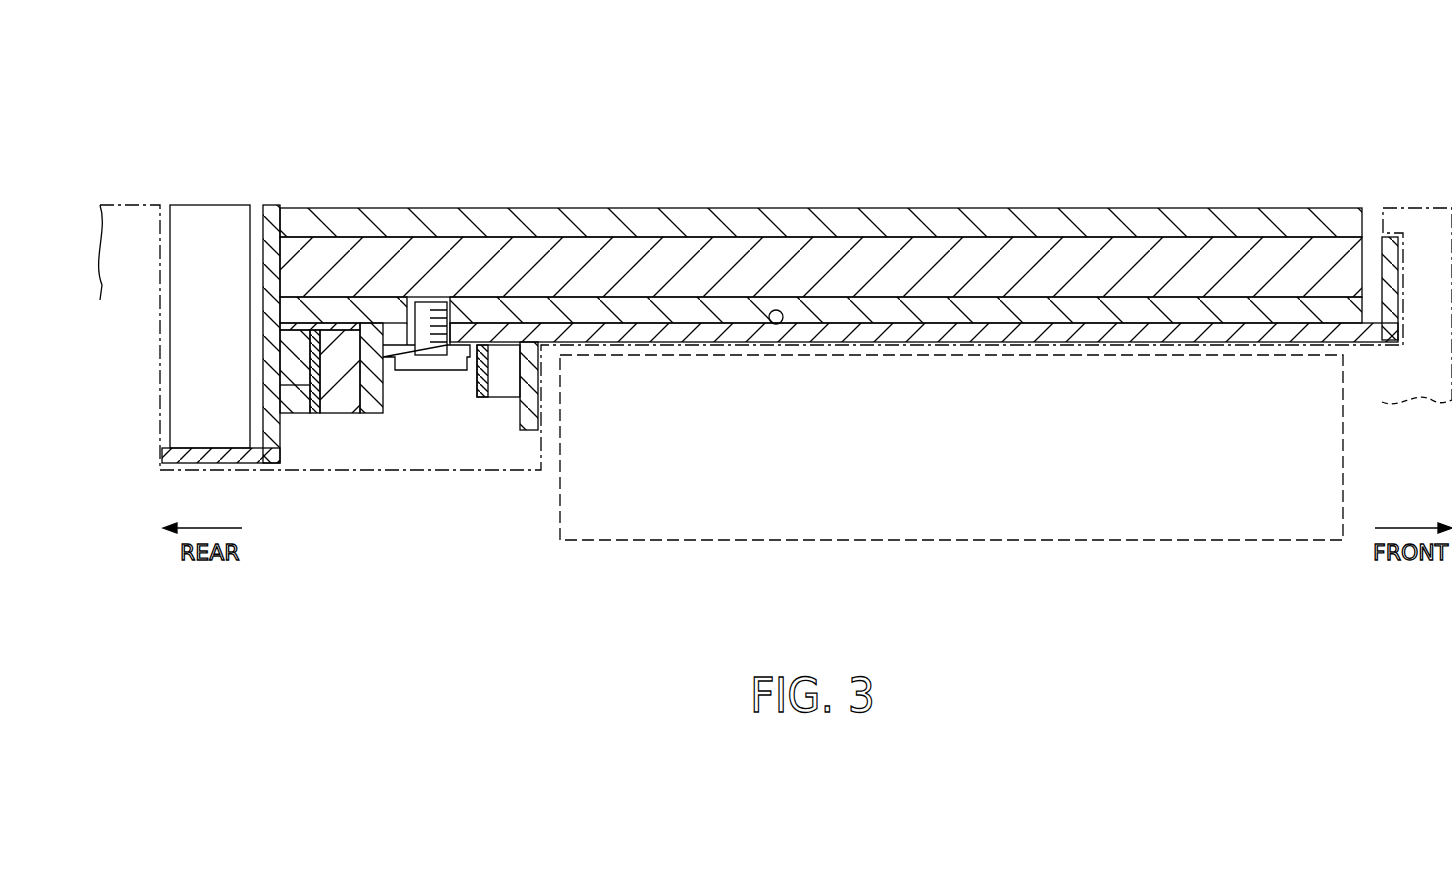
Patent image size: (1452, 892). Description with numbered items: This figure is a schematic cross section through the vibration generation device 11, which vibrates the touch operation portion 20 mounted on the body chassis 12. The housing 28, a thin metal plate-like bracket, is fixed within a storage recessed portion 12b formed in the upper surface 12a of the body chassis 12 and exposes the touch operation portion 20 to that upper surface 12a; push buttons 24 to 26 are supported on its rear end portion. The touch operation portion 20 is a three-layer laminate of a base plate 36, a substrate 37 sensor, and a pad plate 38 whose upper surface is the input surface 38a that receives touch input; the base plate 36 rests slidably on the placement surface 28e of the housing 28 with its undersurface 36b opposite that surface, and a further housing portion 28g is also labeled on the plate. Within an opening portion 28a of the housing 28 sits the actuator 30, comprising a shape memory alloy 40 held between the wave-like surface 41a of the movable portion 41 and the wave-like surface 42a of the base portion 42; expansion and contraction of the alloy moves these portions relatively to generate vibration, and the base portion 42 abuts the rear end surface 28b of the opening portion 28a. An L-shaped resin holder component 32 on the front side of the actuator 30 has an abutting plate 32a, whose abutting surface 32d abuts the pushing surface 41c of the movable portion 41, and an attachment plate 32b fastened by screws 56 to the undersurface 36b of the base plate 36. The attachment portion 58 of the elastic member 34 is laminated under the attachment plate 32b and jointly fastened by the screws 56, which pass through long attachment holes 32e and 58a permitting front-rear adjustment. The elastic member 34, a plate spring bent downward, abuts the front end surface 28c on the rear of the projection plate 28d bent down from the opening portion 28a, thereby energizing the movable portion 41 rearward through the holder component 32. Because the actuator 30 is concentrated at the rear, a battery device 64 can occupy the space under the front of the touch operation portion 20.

The vibration generation device 11 is at (193, 62).
The touch operation portion 20 is at (821, 258).
The body chassis 12 is at (140, 205).
The upper surface 12a is at (1410, 206).
The storage recessed portion 12b is at (1010, 328).
The push button 24 is at (213, 278).
The push button 26 is at (207, 207).
The housing 28 is at (852, 341).
The opening portion 28a is at (455, 378).
The rear end surface 28b is at (280, 416).
The front end surface 28c is at (523, 420).
The projection plate 28d is at (530, 398).
The placement surface 28e is at (776, 324).
The lower surface of support plate 28g is at (940, 342).
The actuator 30 is at (242, 363).
The holder component 32 is at (473, 337).
The abutting plate 32a is at (405, 330).
The attachment plate 32b is at (447, 345).
The abutting surface 32d is at (353, 413).
The attachment hole 32e is at (470, 325).
The elastic member 34 is at (507, 363).
The base plate 36 is at (1172, 310).
The undersurface 36b is at (1102, 325).
The substrate 37 is at (1097, 270).
The pad plate 38 is at (1018, 228).
The input surface 38a is at (863, 208).
The shape memory alloy 40 is at (317, 413).
The movable portion 41 is at (337, 413).
The wave-like surface 41a is at (280, 357).
The pushing surface 41c is at (375, 324).
The base portion 42 is at (303, 413).
The wave-like surface 42a is at (307, 387).
The screw 56 is at (412, 362).
The attachment portion 58 is at (457, 372).
The attachment hole 58a is at (452, 382).
The battery device 64 is at (1100, 541).